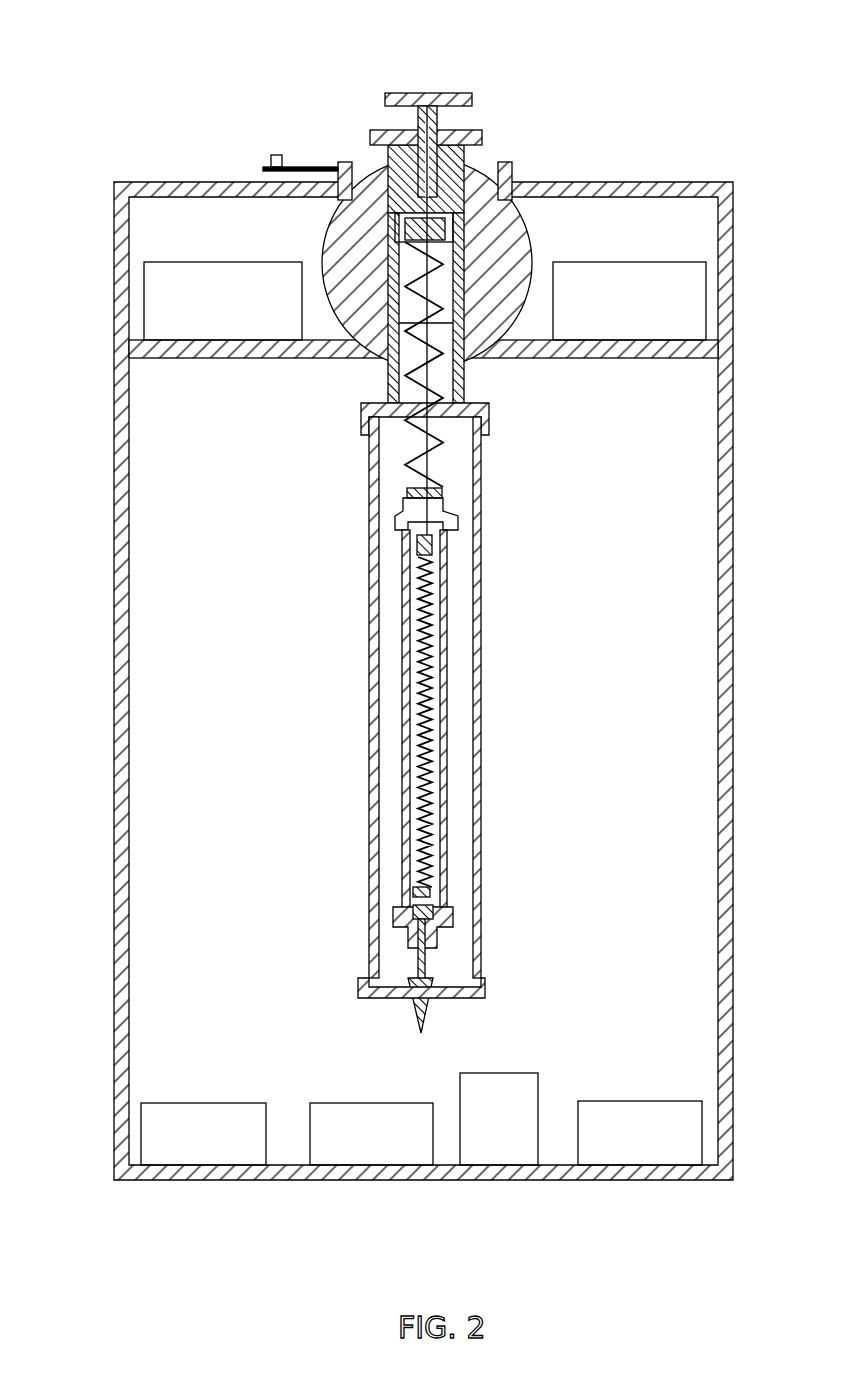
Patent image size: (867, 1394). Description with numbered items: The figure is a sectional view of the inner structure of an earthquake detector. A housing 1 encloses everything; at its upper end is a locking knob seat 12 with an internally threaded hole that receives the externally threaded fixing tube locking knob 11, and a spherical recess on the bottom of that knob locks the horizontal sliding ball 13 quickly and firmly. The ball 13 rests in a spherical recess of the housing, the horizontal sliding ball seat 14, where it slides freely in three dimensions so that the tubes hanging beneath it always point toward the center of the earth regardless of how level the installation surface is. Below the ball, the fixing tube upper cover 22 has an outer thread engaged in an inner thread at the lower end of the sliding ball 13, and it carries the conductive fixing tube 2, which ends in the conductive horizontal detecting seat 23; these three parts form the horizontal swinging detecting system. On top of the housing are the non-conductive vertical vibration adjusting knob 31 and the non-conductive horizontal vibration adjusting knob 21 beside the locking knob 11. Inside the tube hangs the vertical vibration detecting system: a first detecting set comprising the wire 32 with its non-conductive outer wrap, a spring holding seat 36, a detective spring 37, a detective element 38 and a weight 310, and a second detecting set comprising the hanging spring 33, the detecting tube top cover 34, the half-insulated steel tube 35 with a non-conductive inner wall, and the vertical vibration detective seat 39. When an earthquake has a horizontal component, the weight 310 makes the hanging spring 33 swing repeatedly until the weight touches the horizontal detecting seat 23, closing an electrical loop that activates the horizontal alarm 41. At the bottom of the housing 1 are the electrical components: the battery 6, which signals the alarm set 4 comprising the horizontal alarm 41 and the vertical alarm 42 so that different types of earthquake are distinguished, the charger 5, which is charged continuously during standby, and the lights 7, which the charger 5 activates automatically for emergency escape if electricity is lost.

The housing 1 is at (106, 204).
The fixing tube locking knob 11 is at (338, 170).
The locking knob seat 12 is at (510, 183).
The horizontal sliding ball 13 is at (517, 249).
The horizontal sliding ball seat 14 is at (542, 357).
The fixing tube 2 is at (482, 515).
The non-conductive horizontal vibration adjusting knob 21 is at (483, 133).
The fixing tube upper cover 22 is at (361, 414).
The horizontal detecting seat 23 is at (358, 993).
The non-conductive vertical vibration adjusting knob 31 is at (438, 97).
The wire 32 is at (440, 286).
The hanging spring 33 is at (455, 322).
The detecting tube top cover 34 is at (442, 495).
The half-insulated steel tube 35 is at (402, 620).
The spring holding seat 36 is at (432, 543).
The detective spring 37 is at (432, 663).
The detective element 38 is at (440, 900).
The vertical vibration detective seat 39 is at (455, 930).
The weight 310 is at (428, 1005).
The alarm set 4 is at (421, 1190).
The horizontal alarm 41 is at (203, 1134).
The vertical alarm 42 is at (640, 1133).
The charger 5 is at (385, 1102).
The battery 6 is at (458, 1087).
The light 7 is at (245, 262).